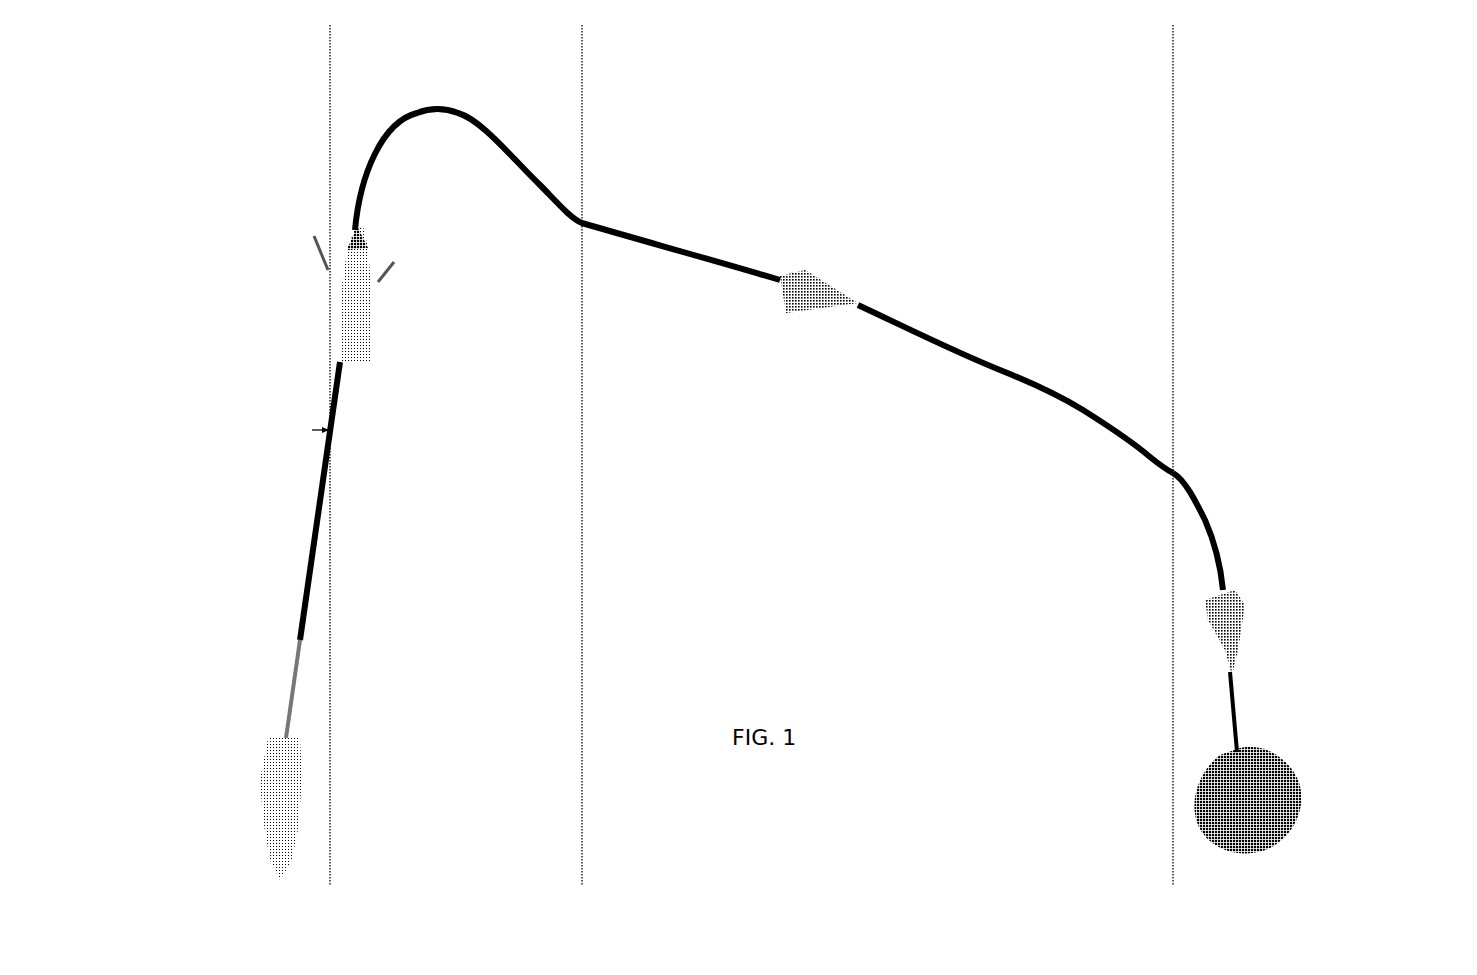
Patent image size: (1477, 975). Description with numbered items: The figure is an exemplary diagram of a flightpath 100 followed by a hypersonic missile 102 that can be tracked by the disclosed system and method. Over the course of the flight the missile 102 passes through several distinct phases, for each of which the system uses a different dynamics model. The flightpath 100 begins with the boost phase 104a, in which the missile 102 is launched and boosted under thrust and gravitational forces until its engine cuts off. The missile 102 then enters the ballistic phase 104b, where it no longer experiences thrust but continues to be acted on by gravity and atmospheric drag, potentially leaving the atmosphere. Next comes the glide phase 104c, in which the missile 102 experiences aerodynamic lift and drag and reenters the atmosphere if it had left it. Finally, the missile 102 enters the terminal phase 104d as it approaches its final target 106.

The flightpath 100 is at (943, 290).
The hypersonic missile 102 is at (345, 318).
The boost phase 104a is at (310, 535).
The ballistic phase 104b is at (437, 116).
The glide phase 104c is at (937, 340).
The terminal phase 104d is at (1192, 485).
The final target 106 is at (1280, 760).